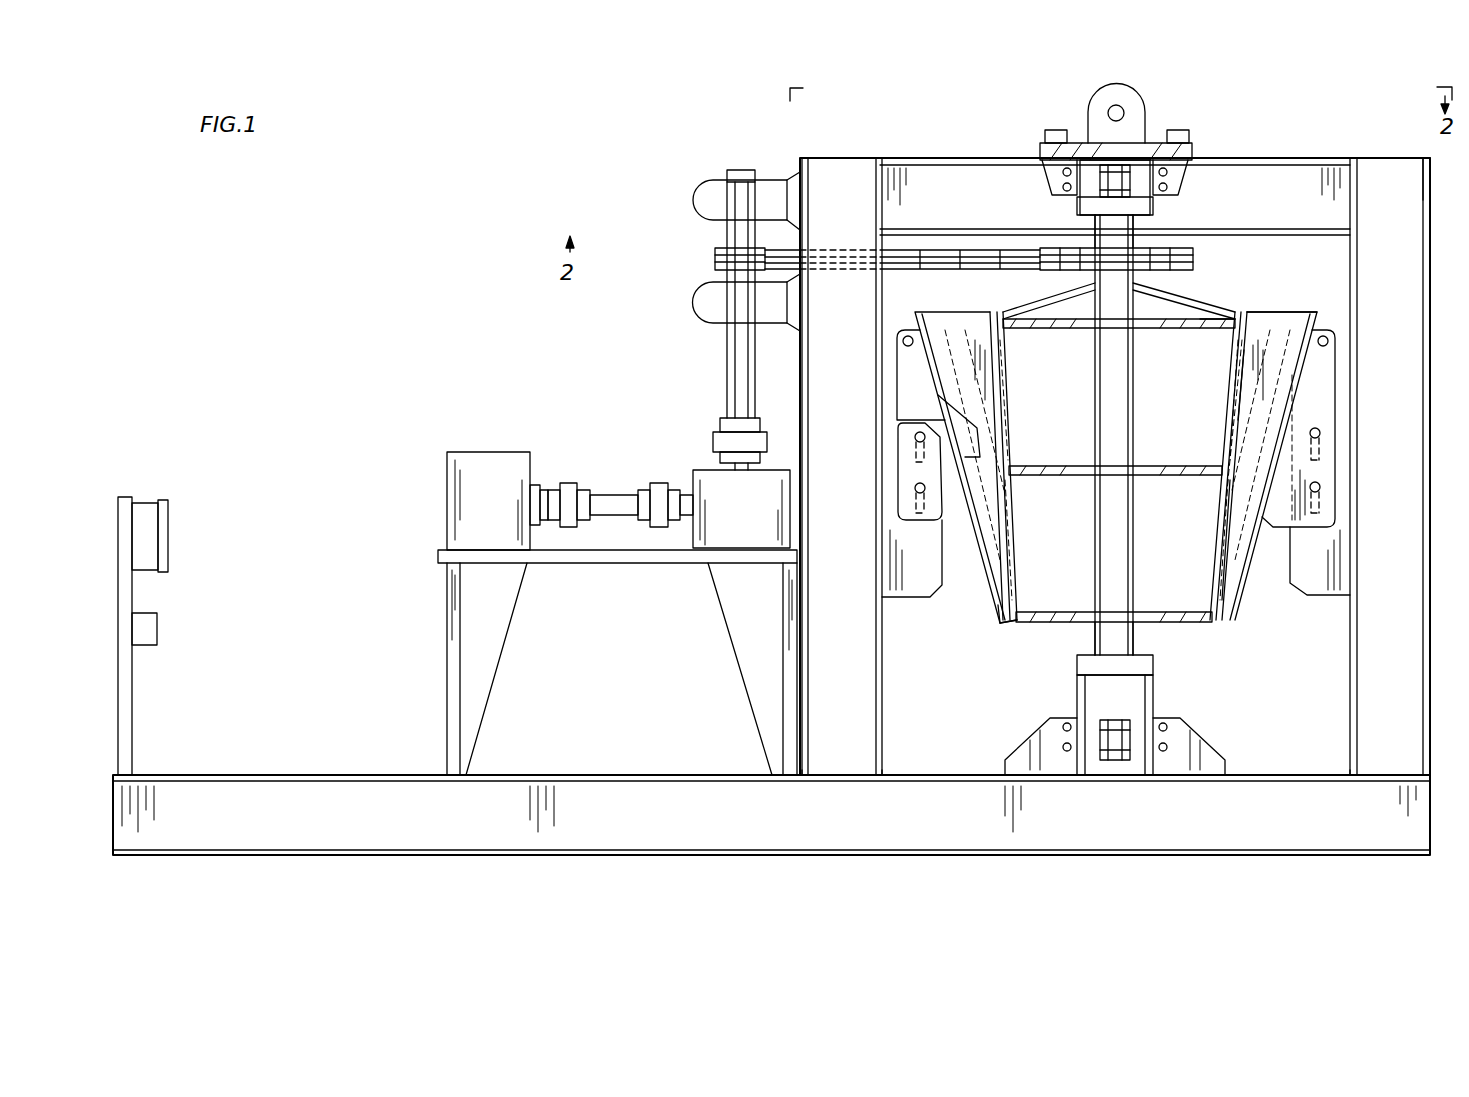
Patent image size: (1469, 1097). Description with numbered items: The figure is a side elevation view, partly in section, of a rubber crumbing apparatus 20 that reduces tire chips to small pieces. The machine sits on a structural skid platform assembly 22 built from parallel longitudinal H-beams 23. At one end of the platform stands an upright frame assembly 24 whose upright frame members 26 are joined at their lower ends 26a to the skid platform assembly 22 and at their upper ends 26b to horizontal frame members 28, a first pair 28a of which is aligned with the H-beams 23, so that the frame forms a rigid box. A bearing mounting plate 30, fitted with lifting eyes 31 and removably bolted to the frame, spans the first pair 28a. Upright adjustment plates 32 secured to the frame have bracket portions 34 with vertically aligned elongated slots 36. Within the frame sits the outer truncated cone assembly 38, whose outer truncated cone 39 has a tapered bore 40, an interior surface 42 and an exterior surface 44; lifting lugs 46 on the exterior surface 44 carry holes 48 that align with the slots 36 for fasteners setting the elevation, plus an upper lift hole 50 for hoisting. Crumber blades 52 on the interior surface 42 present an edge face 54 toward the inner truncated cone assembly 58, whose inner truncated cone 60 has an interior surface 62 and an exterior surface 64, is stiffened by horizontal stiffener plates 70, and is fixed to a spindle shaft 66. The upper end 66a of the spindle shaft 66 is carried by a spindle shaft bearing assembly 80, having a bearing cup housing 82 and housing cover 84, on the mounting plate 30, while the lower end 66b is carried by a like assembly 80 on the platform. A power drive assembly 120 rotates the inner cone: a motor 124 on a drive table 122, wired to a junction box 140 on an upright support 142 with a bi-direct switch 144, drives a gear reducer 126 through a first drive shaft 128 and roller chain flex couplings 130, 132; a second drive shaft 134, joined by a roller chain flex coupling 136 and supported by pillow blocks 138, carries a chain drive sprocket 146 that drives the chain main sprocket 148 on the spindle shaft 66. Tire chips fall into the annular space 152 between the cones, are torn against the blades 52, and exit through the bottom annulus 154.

The rubber crumbing apparatus 20 is at (478, 250).
The structural skid platform assembly 22 is at (297, 775).
The longitudinal H-beams 23 is at (205, 775).
The upright frame assembly 24 is at (888, 694).
The upright frame members 26 is at (810, 362).
The lower ends of upright frame members 26a is at (883, 770).
The upper ends of upright frame members 26b is at (1430, 226).
The horizontal frame members 28 is at (946, 158).
The first pair of horizontal frame members 28a is at (1300, 178).
The bearing mounting plate 30 is at (1183, 148).
The lifting eyes 31 is at (1108, 100).
The upright adjustment plates 32 is at (918, 597).
The bracket portion 34 is at (890, 540).
The elongated slots 36 is at (917, 450).
The outer truncated cone assembly 38 is at (1302, 308).
The outer truncated cone 39 is at (987, 585).
The tapered bore 40 is at (960, 322).
The interior surface 42 is at (1330, 337).
The exterior surface 44 is at (1240, 595).
The lifting lugs 46 is at (1330, 370).
The holes 48 is at (1318, 437).
The upper lift hole 50 is at (905, 342).
The crumber blades 52 is at (937, 396).
The edge face 54 is at (1020, 560).
The inner truncated cone assembly 58 is at (1212, 301).
The inner truncated cone 60 is at (1240, 386).
The interior surface of inner truncated cone 62 is at (1186, 533).
The exterior surface of inner truncated cone 64 is at (1245, 352).
The spindle shaft 66 is at (1105, 392).
The upper end of spindle shaft 66a is at (1097, 228).
The lower end of spindle shaft 66b is at (1136, 636).
The horizontal stiffener plates 70 is at (1065, 328).
The spindle shaft bearing assembly 80 is at (1160, 208).
The bearing cup housing 82 is at (1090, 172).
The housing cover 84 is at (1078, 205).
The power drive assembly 120 is at (638, 430).
The drive table 122 is at (447, 605).
The motor 124 is at (447, 486).
The gear reducer 126 is at (764, 517).
The first drive shaft 128 is at (612, 495).
The roller chain flex coupling 130 is at (566, 483).
The roller chain flex coupling 132 is at (660, 527).
The second drive shaft 134 is at (730, 355).
The roller chain flex coupling 136 is at (713, 440).
The pillow blocks 138 is at (705, 196).
The junction box 140 is at (145, 503).
The upright support 142 is at (126, 590).
The bi-direct switch 144 is at (157, 630).
The chain drive sprocket 146 is at (718, 262).
The chain main sprocket 148 is at (1200, 255).
The annular space 152 is at (1252, 425).
The bottom annulus 154 is at (1005, 625).